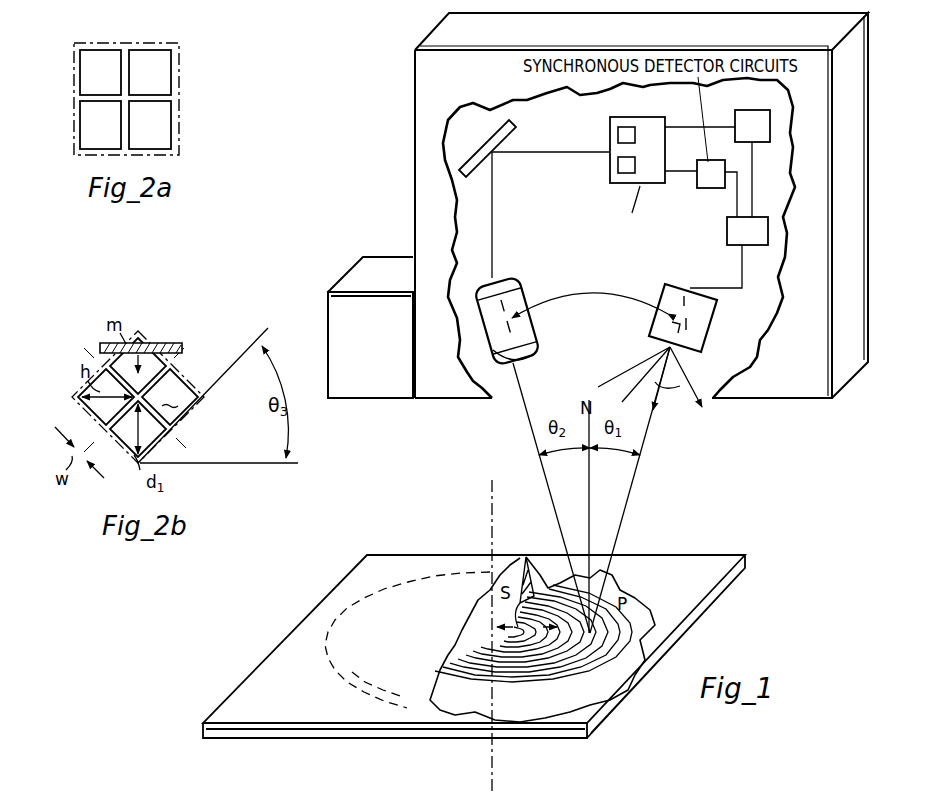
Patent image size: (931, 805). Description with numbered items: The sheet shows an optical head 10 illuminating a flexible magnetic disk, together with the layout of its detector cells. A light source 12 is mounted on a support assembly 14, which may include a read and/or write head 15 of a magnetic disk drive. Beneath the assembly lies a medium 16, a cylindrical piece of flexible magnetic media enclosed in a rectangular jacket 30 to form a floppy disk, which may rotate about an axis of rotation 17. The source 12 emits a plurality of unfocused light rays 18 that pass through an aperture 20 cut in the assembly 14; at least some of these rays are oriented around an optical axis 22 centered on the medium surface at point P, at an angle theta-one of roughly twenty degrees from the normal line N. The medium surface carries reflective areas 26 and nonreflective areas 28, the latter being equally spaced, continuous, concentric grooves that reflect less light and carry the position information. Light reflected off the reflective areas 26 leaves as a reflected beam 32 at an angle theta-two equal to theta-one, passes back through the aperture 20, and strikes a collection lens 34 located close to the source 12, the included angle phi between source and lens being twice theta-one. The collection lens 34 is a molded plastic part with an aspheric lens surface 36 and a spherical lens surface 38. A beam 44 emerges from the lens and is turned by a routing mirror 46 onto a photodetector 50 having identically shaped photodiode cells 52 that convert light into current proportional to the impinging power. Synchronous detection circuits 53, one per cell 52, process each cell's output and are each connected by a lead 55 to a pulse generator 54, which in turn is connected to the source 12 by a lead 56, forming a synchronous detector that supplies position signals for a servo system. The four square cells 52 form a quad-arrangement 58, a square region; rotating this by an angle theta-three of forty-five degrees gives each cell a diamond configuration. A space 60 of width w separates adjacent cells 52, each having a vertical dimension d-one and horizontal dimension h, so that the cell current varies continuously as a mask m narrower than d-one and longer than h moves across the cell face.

In FIG. 1, the optical head 10 is at (404, 190).
In FIG. 1, the light source 12 is at (710, 313).
In FIG. 1, the support assembly 14 is at (437, 36).
In FIG. 1, the read and/or write head 15 is at (345, 282).
In FIG. 1, the medium 16 is at (405, 583).
In FIG. 1, the axis of rotation 17 is at (490, 524).
In FIG. 1, the unfocused light rays 18 is at (632, 380).
In FIG. 1, the aperture 20 is at (497, 393).
In FIG. 1, the optical axis 22 is at (632, 500).
In FIG. 1, the reflective areas 26 is at (470, 660).
In FIG. 1, the nonreflective areas 28 is at (526, 580).
In FIG. 1, the rectangular jacket 30 is at (297, 695).
In FIG. 1, the reflected beam 32 is at (538, 422).
In FIG. 1, the collection lens 34 is at (557, 298).
In FIG. 1, the lens surface 36 is at (531, 358).
In FIG. 1, the lens surface 38 is at (502, 278).
In FIG. 1, the beam 44 is at (495, 190).
In FIG. 1, the routing mirror 46 is at (478, 160).
In FIG. 1, the photodetector 50 is at (667, 117).
In FIG. 1, the photodiode cells 52 is at (618, 165).
In FIG. 2A, the photodiode cells 52 is at (105, 81).
In FIG. 2B, the photodiode cells 52 is at (146, 341).
In FIG. 1, the synchronous detection circuits 53 is at (768, 110).
In FIG. 1, the pulse generator 54 is at (727, 238).
In FIG. 1, the lead 55 is at (740, 192).
In FIG. 1, the lead 56 is at (736, 288).
In FIG. 2A, the quad-arrangement 58 is at (163, 43).
In FIG. 2B, the quad-arrangement 58 is at (191, 393).
In FIG. 2B, the space 60 is at (177, 362).